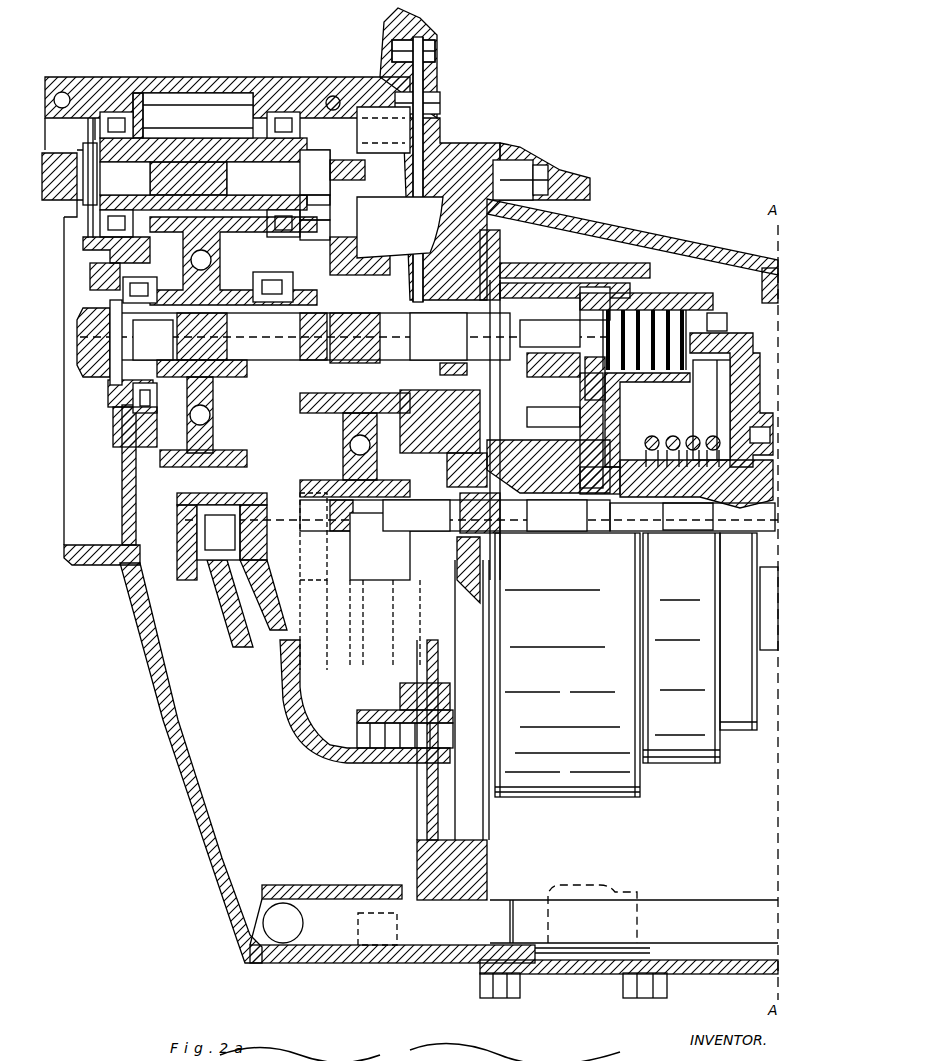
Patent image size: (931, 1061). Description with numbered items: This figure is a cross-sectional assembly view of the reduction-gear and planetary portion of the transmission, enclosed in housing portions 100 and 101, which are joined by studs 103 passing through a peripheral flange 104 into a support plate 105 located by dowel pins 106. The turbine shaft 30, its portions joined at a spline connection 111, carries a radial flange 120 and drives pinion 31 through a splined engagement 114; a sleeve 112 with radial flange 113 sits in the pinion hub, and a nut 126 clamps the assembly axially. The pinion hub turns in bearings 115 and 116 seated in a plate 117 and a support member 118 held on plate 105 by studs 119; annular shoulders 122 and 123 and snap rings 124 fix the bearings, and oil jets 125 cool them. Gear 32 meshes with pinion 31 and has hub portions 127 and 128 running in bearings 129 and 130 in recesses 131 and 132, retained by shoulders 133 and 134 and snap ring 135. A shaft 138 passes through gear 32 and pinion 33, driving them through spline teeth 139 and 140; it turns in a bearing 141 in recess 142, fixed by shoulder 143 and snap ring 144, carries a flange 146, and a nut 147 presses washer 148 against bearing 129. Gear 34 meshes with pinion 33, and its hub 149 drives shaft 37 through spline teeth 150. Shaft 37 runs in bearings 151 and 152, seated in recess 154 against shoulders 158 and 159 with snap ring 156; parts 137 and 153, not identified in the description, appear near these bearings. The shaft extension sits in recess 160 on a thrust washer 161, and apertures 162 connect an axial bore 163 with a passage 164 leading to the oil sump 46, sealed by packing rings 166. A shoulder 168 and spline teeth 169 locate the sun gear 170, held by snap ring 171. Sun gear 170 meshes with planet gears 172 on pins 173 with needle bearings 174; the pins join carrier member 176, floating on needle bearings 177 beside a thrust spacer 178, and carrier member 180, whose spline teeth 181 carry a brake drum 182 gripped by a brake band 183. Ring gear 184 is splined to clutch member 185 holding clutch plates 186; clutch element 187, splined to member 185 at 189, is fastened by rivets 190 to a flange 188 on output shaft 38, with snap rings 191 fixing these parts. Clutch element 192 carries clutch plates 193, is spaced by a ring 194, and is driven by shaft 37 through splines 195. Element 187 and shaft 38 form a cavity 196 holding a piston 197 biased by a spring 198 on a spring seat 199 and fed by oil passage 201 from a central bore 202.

The turbine shaft 30 is at (88, 160).
The pinion 31 is at (166, 128).
The gear 32 is at (120, 480).
The pinion 33 is at (340, 292).
The gear 34 is at (255, 685).
The shaft 37 is at (488, 513).
The output shaft 38 is at (696, 484).
The oil sump 46 is at (449, 779).
The housing portion 100 is at (228, 78).
The intermediate housing portion 101 is at (612, 222).
The studs 103 is at (537, 178).
The peripheral flange 104 is at (495, 150).
The support plate 105 is at (445, 142).
The dowel pins 106 is at (435, 58).
The spline connection 111 is at (48, 202).
The sleeve 112 is at (312, 210).
The radial flange 113 is at (305, 157).
The splined driving engagement 114 is at (225, 138).
The bearing 115 is at (80, 146).
The bearing 116 is at (312, 230).
The plate 117 is at (112, 262).
The support member 118 is at (318, 256).
The studs 119 is at (468, 729).
The radial flange 120 is at (62, 232).
The annular shoulder 122 is at (95, 116).
The annular shoulder 123 is at (250, 92).
The snap rings 124 is at (150, 106).
The oil jets 125 is at (95, 62).
The nut 126 is at (380, 163).
The hub portion 127 is at (144, 340).
The hub portion 128 is at (345, 336).
The bearing 129 is at (120, 300).
The bearing 130 is at (292, 288).
The axial recess 131 is at (112, 425).
The recess 132 is at (180, 247).
The annular shoulder 133 is at (110, 278).
The annular shoulder 134 is at (296, 272).
The snap ring 135 is at (125, 445).
The bearing 137 is at (431, 440).
The shaft 138 is at (214, 347).
The external spline teeth 139 is at (195, 336).
The external spline teeth 140 is at (355, 338).
The bearing 141 is at (438, 336).
The axially extending recess 142 is at (470, 258).
The annular shoulder 143 is at (395, 297).
The snap ring 144 is at (478, 280).
The radial flange 146 is at (485, 340).
The nut 147 is at (80, 345).
The washer 148 is at (120, 385).
The hub 149 is at (360, 591).
The internal spline teeth 150 is at (346, 515).
The bearing 151 is at (316, 536).
The bearing 152 is at (467, 470).
The gear 153 is at (383, 412).
The axial recess 154 is at (321, 435).
The snap ring 156 is at (331, 458).
The annular shoulder 158 is at (584, 430).
The annular shoulder 159 is at (440, 421).
The recess 160 is at (205, 587).
The thrust washer 161 is at (185, 556).
The radially extending apertures 162 is at (200, 526).
The axially extending bore 163 is at (321, 517).
The passage 164 is at (230, 623).
The packing rings 166 is at (180, 498).
The radial shoulder 168 is at (455, 515).
The external spline teeth 169 is at (490, 545).
The sun gear 170 is at (548, 466).
The snap ring 171 is at (520, 536).
The planet gears 172 is at (553, 415).
The pin 173 is at (553, 364).
The needle bearings 174 is at (531, 460).
The carrier member 176 is at (584, 548).
The needle bearings 177 is at (481, 515).
The thrust spacer member 178 is at (561, 460).
The carrier member 180 is at (460, 358).
The external spline teeth 181 is at (518, 265).
The brake drum 182 is at (643, 295).
The brake band 183 is at (560, 285).
The ring gear 184 is at (550, 333).
The circular clutch member 185 is at (680, 295).
The clutch plates 186 is at (640, 295).
The clutch element 187 is at (760, 350).
The radial flange 188 is at (762, 461).
The spline engagement 189 is at (705, 304).
The rivets 190 is at (765, 416).
The snap rings 191 is at (712, 318).
The clutch element 192 is at (647, 420).
The clutch plates 193 is at (601, 315).
The spacer ring 194 is at (606, 483).
The driving engagement 195 is at (615, 532).
The annular cavity 196 is at (752, 396).
The piston element 197 is at (760, 366).
The spring 198 is at (770, 438).
The spring seat 199 is at (682, 461).
The oil passage 201 is at (760, 496).
The central bore 202 is at (765, 518).